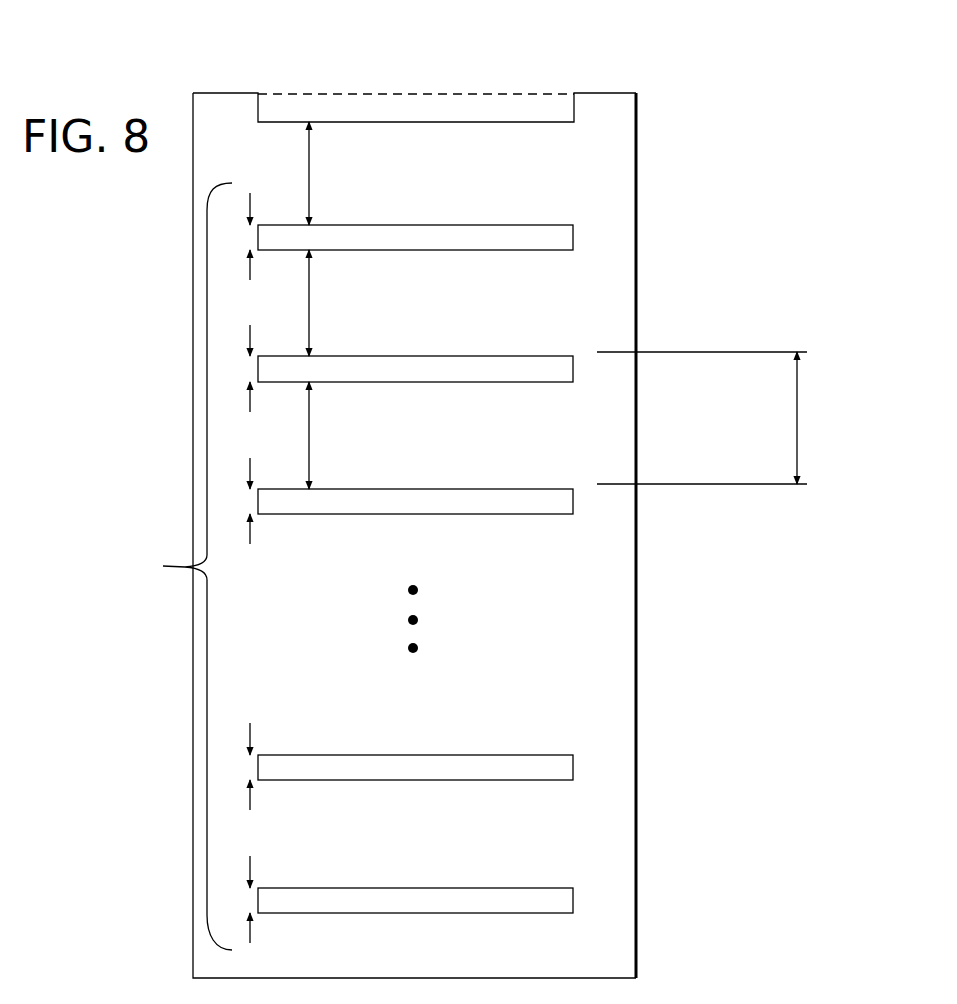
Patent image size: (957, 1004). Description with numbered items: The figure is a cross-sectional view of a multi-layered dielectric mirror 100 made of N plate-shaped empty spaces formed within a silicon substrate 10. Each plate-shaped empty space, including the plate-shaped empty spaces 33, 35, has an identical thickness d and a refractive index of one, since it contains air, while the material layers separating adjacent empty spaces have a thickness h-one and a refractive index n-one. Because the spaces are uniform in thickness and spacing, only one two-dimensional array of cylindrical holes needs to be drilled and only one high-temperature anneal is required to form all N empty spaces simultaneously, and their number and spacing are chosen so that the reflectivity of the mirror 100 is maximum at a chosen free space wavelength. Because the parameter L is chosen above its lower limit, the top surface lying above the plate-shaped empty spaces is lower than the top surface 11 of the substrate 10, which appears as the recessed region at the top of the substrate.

The multi-layered dielectric mirror 100 is at (240, 78).
The silicon substrate 10 is at (623, 572).
The top surface 11 is at (608, 93).
The plate-shaped empty space 35 is at (570, 768).
The plate-shaped empty space 33 is at (570, 900).